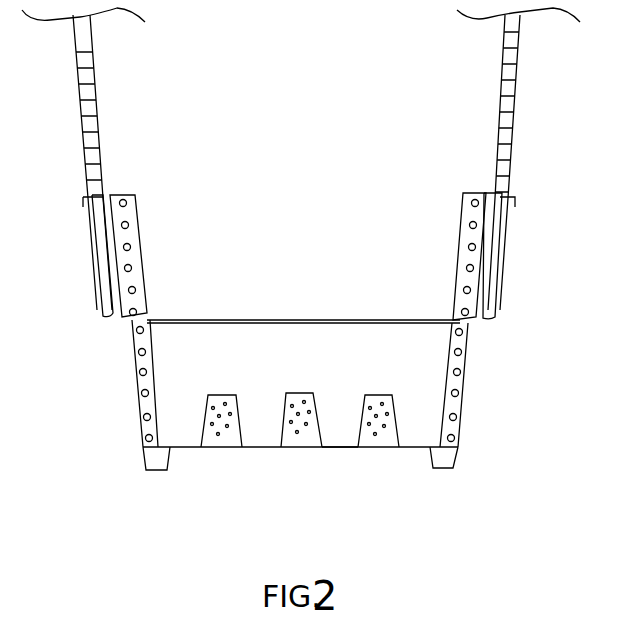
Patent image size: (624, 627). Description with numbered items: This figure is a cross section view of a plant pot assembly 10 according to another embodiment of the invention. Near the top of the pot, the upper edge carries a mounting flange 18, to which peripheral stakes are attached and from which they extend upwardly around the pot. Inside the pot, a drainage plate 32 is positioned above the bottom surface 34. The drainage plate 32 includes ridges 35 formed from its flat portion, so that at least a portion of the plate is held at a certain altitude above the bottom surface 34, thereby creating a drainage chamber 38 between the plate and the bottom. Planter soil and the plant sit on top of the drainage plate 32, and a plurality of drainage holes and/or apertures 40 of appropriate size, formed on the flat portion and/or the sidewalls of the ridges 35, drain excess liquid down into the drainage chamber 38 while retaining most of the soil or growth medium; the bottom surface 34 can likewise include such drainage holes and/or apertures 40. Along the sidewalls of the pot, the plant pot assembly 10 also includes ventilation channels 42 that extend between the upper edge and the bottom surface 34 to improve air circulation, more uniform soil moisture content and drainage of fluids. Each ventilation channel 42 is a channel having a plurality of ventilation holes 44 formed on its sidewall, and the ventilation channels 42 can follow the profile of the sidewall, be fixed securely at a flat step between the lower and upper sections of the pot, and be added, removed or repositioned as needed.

The plant pot assembly 10 is at (433, 157).
The mounting flange 18 is at (510, 193).
The drainage plate 32 is at (260, 445).
The bottom surface 34 is at (323, 447).
The ridges 35 is at (292, 393).
The drainage chamber 38 is at (293, 447).
The drainage holes and/or apertures 40 is at (221, 448).
The ventilation channels 42 is at (120, 305).
The ventilation holes 44 is at (136, 382).